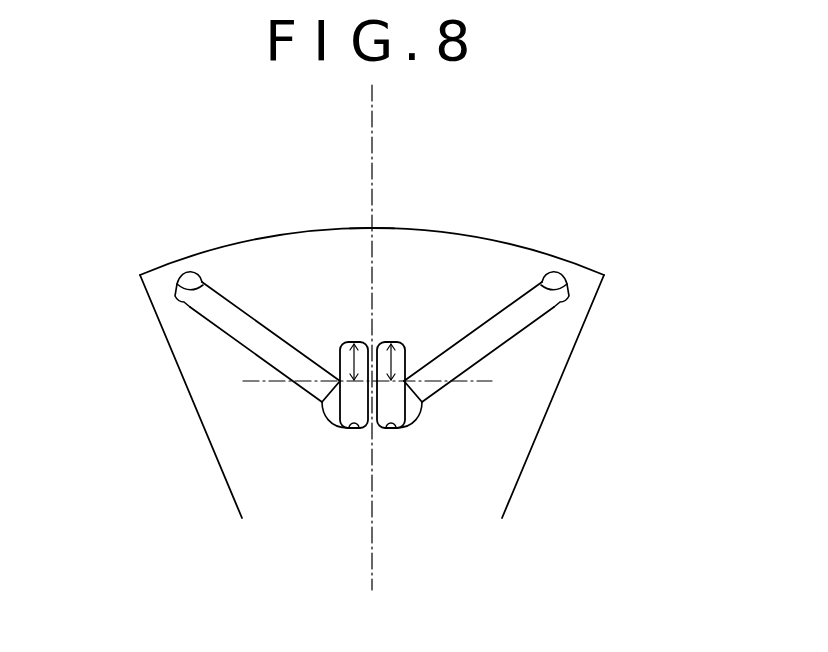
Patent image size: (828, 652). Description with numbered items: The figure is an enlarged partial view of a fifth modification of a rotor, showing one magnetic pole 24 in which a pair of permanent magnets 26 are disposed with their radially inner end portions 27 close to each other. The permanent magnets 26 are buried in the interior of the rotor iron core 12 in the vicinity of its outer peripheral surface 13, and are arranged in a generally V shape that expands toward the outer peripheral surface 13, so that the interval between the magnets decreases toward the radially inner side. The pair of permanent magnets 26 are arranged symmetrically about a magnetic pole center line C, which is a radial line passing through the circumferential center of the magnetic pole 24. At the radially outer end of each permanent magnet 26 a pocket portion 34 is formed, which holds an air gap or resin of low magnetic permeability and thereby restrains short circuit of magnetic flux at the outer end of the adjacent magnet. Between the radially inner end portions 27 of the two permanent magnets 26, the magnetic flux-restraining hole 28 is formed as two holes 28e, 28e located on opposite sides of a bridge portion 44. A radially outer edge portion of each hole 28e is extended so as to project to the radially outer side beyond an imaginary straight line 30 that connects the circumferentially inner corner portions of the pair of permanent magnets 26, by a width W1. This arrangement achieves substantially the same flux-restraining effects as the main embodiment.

The rotor iron core 12 is at (316, 230).
The outer peripheral surface 13 is at (392, 227).
The magnetic pole 24 is at (450, 238).
The permanent magnet 26 is at (261, 343).
The radially inner end portion 27 is at (316, 395).
The magnetic flux-restraining hole 28 is at (371, 438).
The hole 28e is at (432, 487).
The imaginary straight line 30 is at (481, 384).
The pocket portion 34 is at (197, 279).
The bridge portion 44 is at (383, 408).
The magnetic pole center line C is at (374, 127).
The width W1 is at (340, 355).